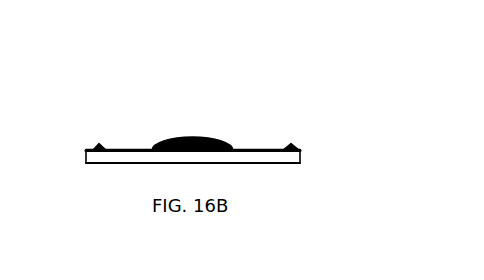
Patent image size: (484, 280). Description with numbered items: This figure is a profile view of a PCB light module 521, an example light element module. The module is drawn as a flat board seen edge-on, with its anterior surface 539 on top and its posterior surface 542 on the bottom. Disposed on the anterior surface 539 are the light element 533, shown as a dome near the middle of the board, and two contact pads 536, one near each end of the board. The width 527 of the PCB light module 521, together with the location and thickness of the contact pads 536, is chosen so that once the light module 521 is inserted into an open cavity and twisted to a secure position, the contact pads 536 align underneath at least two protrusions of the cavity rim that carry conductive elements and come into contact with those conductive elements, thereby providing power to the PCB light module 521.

The PCB light module 521 is at (196, 86).
The width 527 is at (90, 158).
The light element 533 is at (179, 137).
The contact pads 536 is at (99, 144).
The anterior surface 539 is at (256, 139).
The posterior surface 542 is at (260, 176).